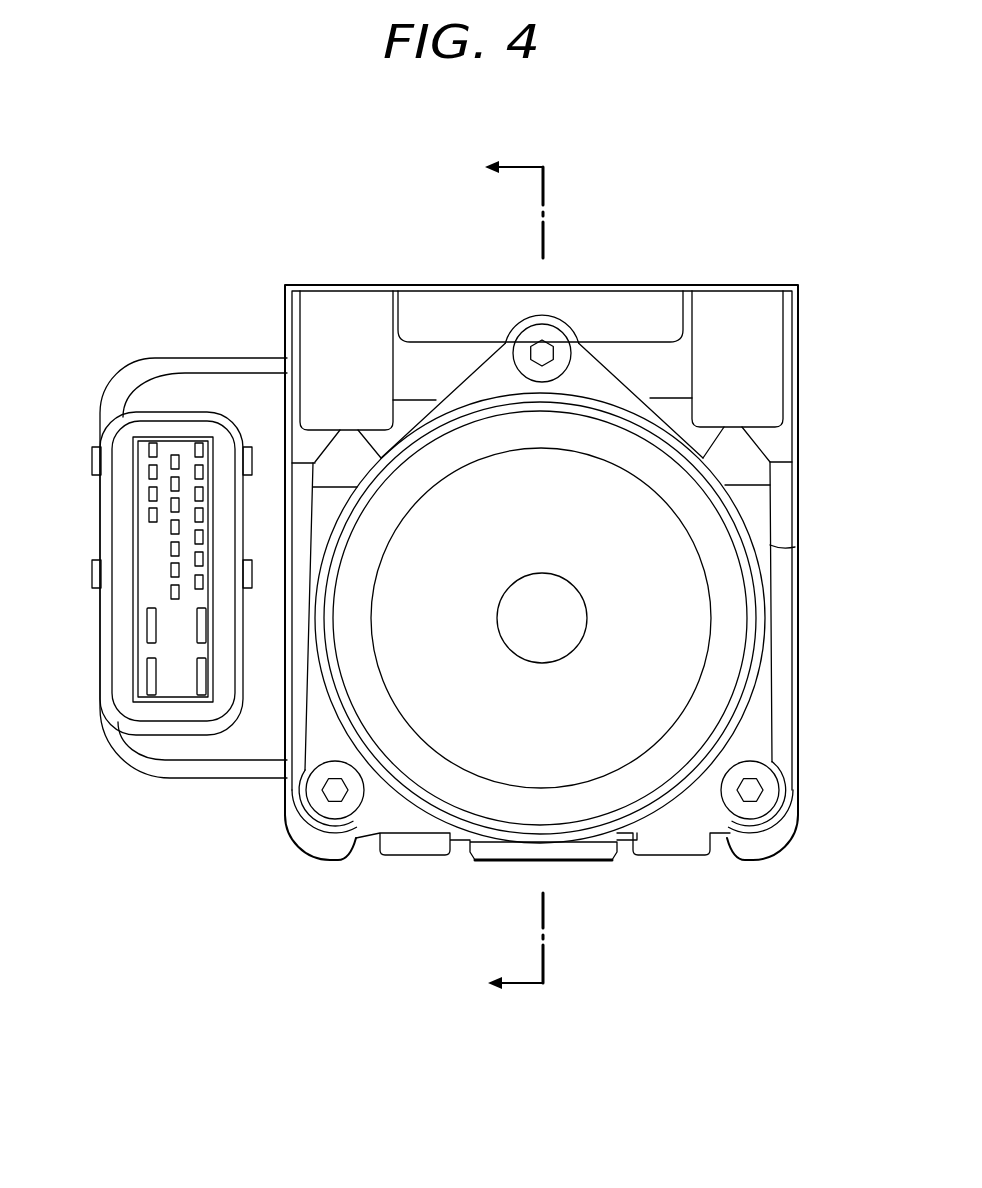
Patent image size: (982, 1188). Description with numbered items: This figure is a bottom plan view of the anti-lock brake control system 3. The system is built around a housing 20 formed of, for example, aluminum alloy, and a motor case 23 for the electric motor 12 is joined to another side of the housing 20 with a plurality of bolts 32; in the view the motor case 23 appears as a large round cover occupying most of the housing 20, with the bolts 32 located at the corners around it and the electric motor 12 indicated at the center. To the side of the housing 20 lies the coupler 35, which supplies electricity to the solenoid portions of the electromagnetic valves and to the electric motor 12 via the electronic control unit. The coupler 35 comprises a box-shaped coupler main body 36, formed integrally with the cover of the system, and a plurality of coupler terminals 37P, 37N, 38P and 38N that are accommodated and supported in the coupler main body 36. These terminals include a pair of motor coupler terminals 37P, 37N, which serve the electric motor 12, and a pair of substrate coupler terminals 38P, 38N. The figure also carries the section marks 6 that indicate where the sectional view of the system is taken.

The anti-lock brake control system 3 is at (686, 252).
The section line VI-VI 6 is at (503, 580).
The electric motor 12 is at (634, 632).
The housing 20 is at (773, 332).
The motor case 23 is at (763, 600).
The bolts 32 is at (548, 338).
The coupler 35 is at (162, 396).
The coupler main body 36 is at (100, 668).
The motor coupler terminal 37N is at (150, 695).
The motor coupler terminal 37P is at (200, 695).
The substrate coupler terminal 38N is at (200, 445).
The substrate coupler terminal 38P is at (203, 630).